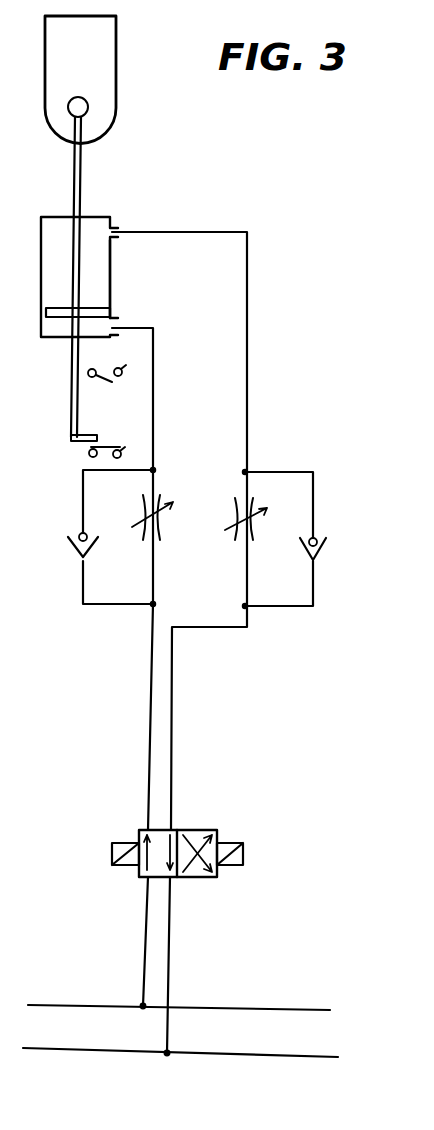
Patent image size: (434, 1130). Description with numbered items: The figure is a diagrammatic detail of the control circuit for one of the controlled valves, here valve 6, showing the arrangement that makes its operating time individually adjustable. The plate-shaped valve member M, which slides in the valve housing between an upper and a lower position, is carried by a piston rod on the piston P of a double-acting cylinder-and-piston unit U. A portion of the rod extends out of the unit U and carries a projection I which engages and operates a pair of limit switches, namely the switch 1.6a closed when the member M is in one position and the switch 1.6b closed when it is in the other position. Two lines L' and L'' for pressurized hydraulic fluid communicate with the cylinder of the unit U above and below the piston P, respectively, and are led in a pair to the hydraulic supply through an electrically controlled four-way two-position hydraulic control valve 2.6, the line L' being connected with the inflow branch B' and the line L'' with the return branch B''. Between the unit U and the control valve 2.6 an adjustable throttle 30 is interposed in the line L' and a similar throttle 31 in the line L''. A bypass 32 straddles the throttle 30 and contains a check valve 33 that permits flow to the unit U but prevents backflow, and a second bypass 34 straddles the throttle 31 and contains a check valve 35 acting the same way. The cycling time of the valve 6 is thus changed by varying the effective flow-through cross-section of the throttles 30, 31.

The plate-shaped valve member M is at (110, 73).
The piston P is at (95, 306).
The double-acting cylinder-and-piston unit U is at (97, 221).
The valve 6 is at (110, 260).
The limit switch 1.6a is at (107, 367).
The limit switch 1.6b is at (112, 445).
The projection I is at (88, 456).
The fluid line L' is at (143, 667).
The fluid line L'' is at (202, 642).
The bypass 32 is at (120, 605).
The check valve 33 is at (87, 535).
The adjustable throttle 30 is at (163, 535).
The second bypass 34 is at (313, 507).
The check valve 35 is at (327, 545).
The adjustable throttle 31 is at (256, 530).
The hydraulic control valve 2.6 is at (216, 833).
The inflow branch B' is at (179, 991).
The return branch B'' is at (180, 1040).